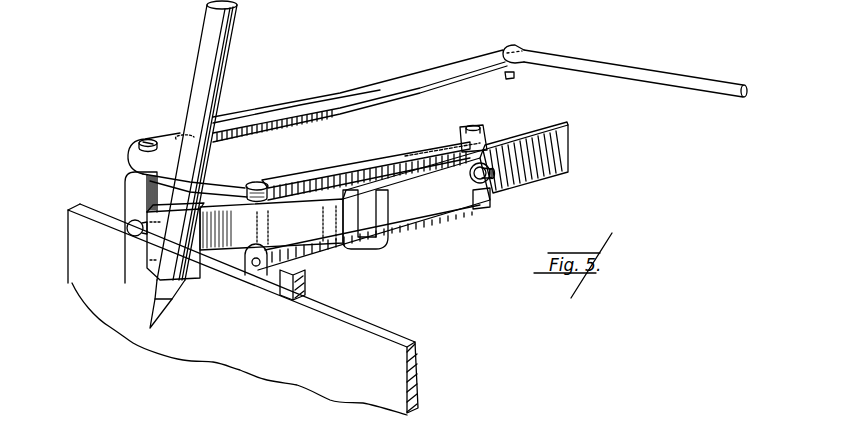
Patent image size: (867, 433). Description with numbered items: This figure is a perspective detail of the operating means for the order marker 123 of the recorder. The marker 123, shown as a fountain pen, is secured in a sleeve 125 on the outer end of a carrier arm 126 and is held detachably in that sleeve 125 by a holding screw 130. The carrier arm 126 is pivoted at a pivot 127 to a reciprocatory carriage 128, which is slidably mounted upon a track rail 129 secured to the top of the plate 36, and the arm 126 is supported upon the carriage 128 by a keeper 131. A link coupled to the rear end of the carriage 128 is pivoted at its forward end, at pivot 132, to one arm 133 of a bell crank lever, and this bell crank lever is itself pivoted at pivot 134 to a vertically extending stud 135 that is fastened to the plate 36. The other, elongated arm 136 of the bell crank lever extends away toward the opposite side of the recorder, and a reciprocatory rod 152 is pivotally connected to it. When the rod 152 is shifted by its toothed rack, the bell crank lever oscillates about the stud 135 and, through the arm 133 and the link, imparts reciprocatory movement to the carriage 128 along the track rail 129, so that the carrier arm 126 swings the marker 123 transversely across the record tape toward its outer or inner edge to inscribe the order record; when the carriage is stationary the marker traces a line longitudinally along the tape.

The plate 36 is at (243, 309).
The order marker 123 is at (239, 40).
The sleeve 125 is at (160, 256).
The carrier arm 126 is at (427, 205).
The pivot 127 is at (492, 174).
The reciprocatory carriage 128 is at (483, 209).
The track rail 129 is at (563, 153).
The holding screw 130 is at (127, 229).
The keeper 131 is at (372, 244).
The pivot 132 is at (260, 185).
The arm of bell crank lever 133 is at (218, 178).
The pivot 134 is at (149, 140).
The vertically extending stud 135 is at (133, 184).
The arm of bell crank lever 136 is at (477, 77).
The reciprocatory rod 152 is at (673, 79).